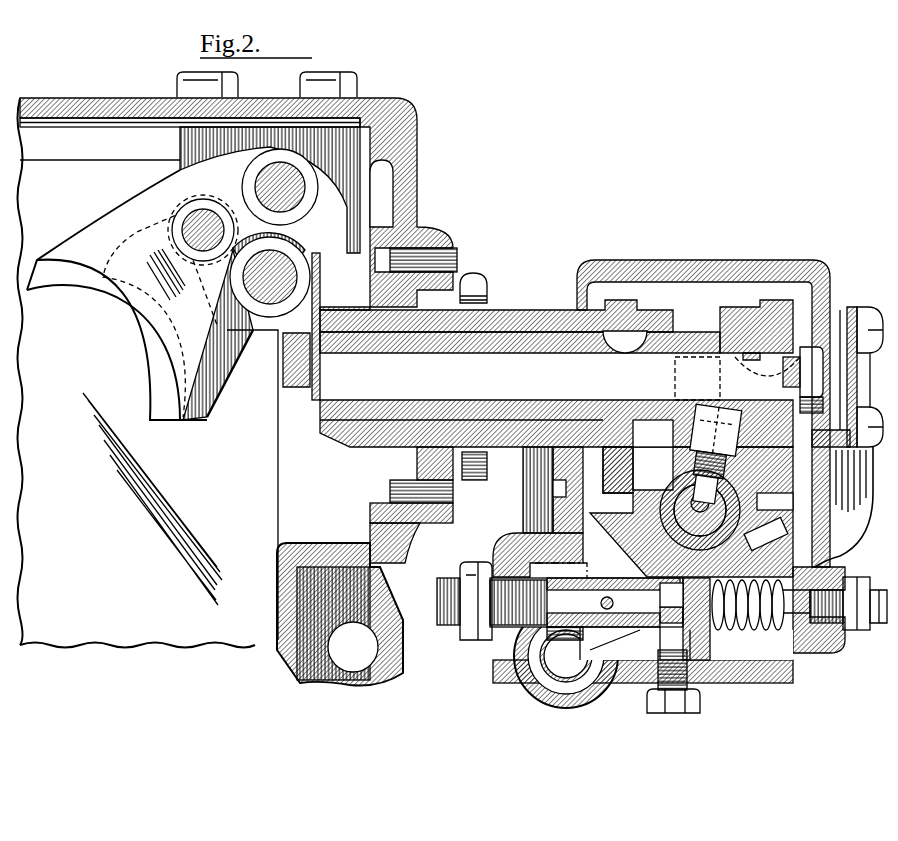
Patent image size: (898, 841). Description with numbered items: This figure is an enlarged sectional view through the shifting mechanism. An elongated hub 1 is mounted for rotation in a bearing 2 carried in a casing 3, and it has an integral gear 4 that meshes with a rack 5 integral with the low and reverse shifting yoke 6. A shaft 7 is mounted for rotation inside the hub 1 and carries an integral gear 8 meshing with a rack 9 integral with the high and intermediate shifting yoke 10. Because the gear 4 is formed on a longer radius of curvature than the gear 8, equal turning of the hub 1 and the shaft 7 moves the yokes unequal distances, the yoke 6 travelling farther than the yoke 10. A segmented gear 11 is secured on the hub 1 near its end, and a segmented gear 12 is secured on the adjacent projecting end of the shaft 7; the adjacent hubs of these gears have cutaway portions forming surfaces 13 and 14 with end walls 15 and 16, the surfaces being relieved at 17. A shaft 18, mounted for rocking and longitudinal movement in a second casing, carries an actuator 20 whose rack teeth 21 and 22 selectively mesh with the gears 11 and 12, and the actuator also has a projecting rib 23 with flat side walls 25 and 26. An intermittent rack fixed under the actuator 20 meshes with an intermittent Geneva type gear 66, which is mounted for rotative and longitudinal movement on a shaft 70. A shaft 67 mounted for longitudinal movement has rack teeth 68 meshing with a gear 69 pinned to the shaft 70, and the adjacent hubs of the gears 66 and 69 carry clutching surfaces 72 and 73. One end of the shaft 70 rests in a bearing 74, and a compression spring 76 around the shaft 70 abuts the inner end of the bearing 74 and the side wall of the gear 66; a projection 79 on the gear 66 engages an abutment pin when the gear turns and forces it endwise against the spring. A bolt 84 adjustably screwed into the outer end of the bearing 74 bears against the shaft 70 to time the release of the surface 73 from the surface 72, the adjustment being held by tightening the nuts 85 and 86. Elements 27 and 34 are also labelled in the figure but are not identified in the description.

The hub 1 is at (514, 340).
The bearing 2 is at (545, 328).
The casing 3 is at (620, 262).
The gear 4 is at (336, 285).
The rack 5 is at (323, 240).
The low and reverse shifting yoke 6 is at (365, 307).
The shaft 7 is at (490, 435).
The gear 8 is at (290, 362).
The rack 9 is at (290, 333).
The high and intermediate shifting yoke 10 is at (226, 362).
The segmented gear 11 is at (652, 468).
The segmented gear 12 is at (812, 462).
The surface 13 is at (668, 405).
The surface 14 is at (613, 603).
The end wall 15 is at (675, 325).
The end wall 16 is at (722, 322).
The relief 17 is at (748, 405).
The shaft 18 is at (722, 508).
The actuator 20 is at (668, 486).
The rack teeth 21 is at (605, 515).
The rack teeth 22 is at (778, 532).
The projecting rib 23 is at (743, 484).
The flat side wall 25 is at (680, 432).
The flat side wall 26 is at (749, 466).
The adjusting screw 27 is at (705, 403).
The screw tip 34 is at (700, 496).
The intermittent Geneva type gear 66 is at (698, 628).
The shaft 67 is at (590, 625).
The rack teeth 68 is at (580, 635).
The gear 69 is at (582, 615).
The shaft 70 is at (768, 630).
The clutching surface 72 is at (660, 625).
The clutching surface 73 is at (665, 596).
The bearing 74 is at (810, 635).
The compression spring 76 is at (742, 630).
The projection 79 is at (680, 625).
The bolt 84 is at (875, 624).
The nut 85 is at (852, 585).
The nut 86 is at (472, 640).